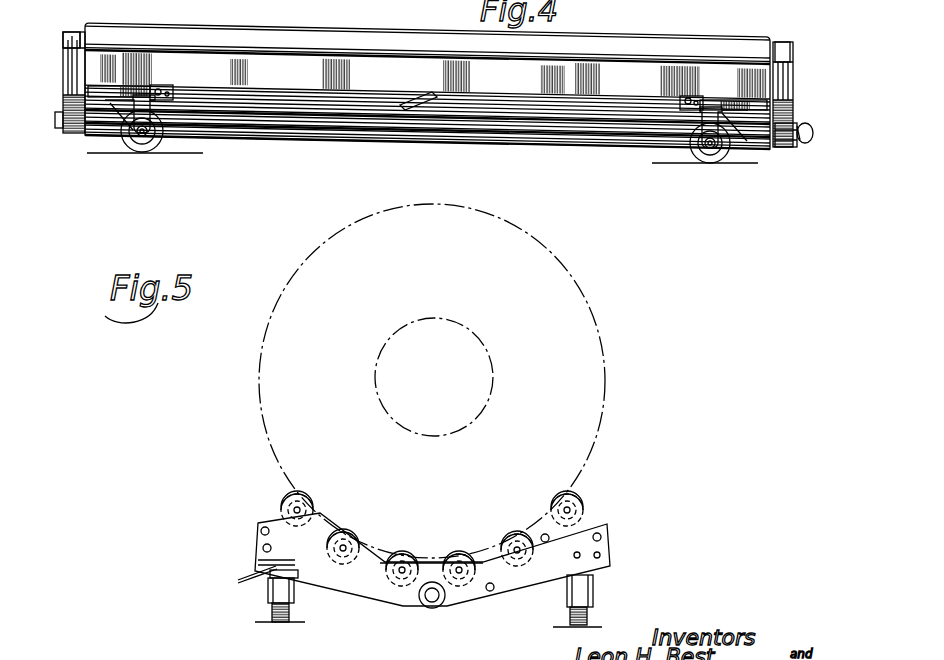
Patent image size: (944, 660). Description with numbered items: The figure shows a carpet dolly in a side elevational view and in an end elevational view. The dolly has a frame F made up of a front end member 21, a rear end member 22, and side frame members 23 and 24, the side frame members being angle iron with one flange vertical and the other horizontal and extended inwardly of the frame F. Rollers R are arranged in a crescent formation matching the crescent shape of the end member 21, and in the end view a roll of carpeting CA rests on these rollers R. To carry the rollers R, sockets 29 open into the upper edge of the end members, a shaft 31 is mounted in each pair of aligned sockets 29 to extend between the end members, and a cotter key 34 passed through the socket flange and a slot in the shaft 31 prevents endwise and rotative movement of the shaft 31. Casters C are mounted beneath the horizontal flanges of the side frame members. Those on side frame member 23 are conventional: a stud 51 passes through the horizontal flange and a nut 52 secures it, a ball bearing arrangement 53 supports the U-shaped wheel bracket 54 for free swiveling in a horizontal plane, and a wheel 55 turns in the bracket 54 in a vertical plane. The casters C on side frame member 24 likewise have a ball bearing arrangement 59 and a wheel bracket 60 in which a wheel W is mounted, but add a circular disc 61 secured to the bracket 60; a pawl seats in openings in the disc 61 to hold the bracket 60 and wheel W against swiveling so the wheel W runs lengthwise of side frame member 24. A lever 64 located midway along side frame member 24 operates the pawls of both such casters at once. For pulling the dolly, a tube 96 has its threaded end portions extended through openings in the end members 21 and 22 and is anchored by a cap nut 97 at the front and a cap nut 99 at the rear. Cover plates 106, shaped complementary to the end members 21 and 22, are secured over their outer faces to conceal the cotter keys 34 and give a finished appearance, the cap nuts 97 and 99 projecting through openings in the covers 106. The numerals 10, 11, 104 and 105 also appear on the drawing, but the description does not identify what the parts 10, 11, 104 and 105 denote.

In FIG. 5, the track 10 is at (337, 565).
In FIG. 5, the flange 11 is at (315, 548).
In FIG. 4, the front end member 21 is at (75, 135).
In FIG. 5, the front end member 21 is at (355, 580).
In FIG. 4, the rear end member 22 is at (777, 160).
In FIG. 5, the side frame member 23 is at (612, 536).
In FIG. 4, the side frame member 24 is at (619, 63).
In FIG. 5, the side frame member 24 is at (258, 536).
In FIG. 5, the socket 29 is at (458, 568).
In FIG. 5, the shaft 31 is at (409, 552).
In FIG. 5, the cotter key 34 is at (401, 566).
In FIG. 5, the stud 51 is at (272, 512).
In FIG. 5, the nut 52 is at (262, 548).
In FIG. 5, the ball bearing arrangement 53 is at (238, 581).
In FIG. 5, the U-shaped wheel bracket 54 is at (598, 584).
In FIG. 5, the wheel 55 is at (592, 620).
In FIG. 4, the ball bearing arrangement 59 is at (114, 93).
In FIG. 4, the wheel bracket 60 is at (120, 110).
In FIG. 5, the wheel bracket 60 is at (266, 590).
In FIG. 4, the circular disc 61 is at (160, 90).
In FIG. 5, the circular disc 61 is at (270, 574).
In FIG. 4, the lever 64 is at (418, 94).
In FIG. 5, the lever 64 is at (252, 562).
In FIG. 4, the tube 96 is at (313, 140).
In FIG. 4, the cap nut 97 is at (60, 129).
In FIG. 4, the cap nut 99 is at (794, 148).
In FIG. 4, the end plate 104 is at (786, 88).
In FIG. 5, the end plate 104 is at (590, 530).
In FIG. 4, the knob 105 is at (812, 150).
In FIG. 5, the knob 105 is at (432, 602).
In FIG. 4, the cover plate 106 is at (64, 35).
In FIG. 5, the cover plate 106 is at (439, 562).
In FIG. 4, the rollers R is at (292, 40).
In FIG. 5, the rollers R is at (352, 533).
In FIG. 4, the frame F is at (304, 71).
In FIG. 5, the frame F is at (258, 527).
In FIG. 4, the casters C is at (168, 143).
In FIG. 5, the casters C is at (279, 625).
In FIG. 4, the wheel W is at (147, 153).
In FIG. 5, the wheel W is at (300, 621).
In FIG. 5, the roll of carpeting CA is at (606, 351).